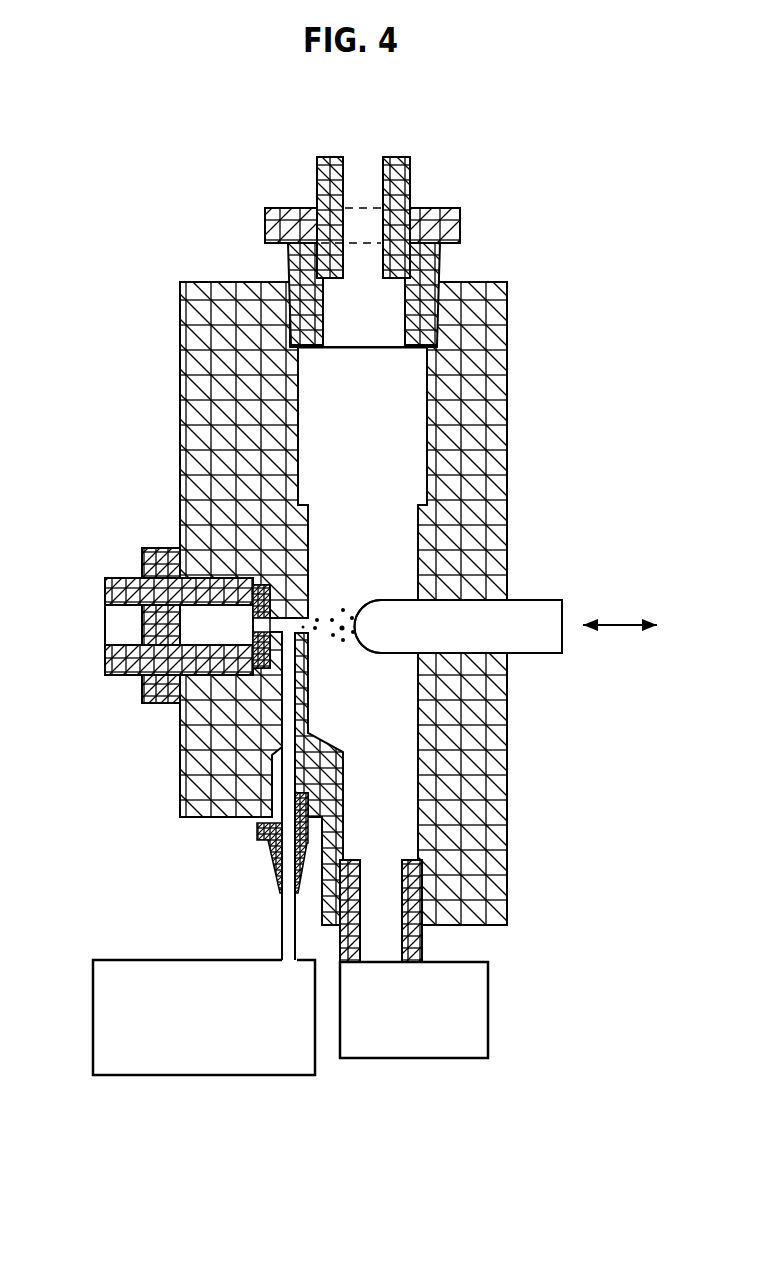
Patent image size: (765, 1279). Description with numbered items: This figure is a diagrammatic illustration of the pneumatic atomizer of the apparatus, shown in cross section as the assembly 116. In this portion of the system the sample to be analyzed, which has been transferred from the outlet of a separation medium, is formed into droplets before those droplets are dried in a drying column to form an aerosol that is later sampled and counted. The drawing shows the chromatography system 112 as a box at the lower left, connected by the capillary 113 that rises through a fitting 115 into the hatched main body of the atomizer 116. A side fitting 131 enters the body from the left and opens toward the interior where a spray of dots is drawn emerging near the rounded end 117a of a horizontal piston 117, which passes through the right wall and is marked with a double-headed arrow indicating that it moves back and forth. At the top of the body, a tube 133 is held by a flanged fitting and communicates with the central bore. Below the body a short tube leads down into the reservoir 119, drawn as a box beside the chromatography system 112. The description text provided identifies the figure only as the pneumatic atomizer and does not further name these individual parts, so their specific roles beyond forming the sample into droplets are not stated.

The nebulizer assembly 116 is at (113, 229).
The gas inlet tube 133 is at (363, 167).
The nebulizing gas fitting 131 is at (252, 627).
The rounded tip of piston 117a is at (362, 605).
The piston 117 is at (527, 653).
The capillary fitting body 115 is at (288, 778).
The capillary tube 113 is at (282, 933).
The reservoir 119 is at (488, 1015).
The chromatography system 112 is at (212, 1075).